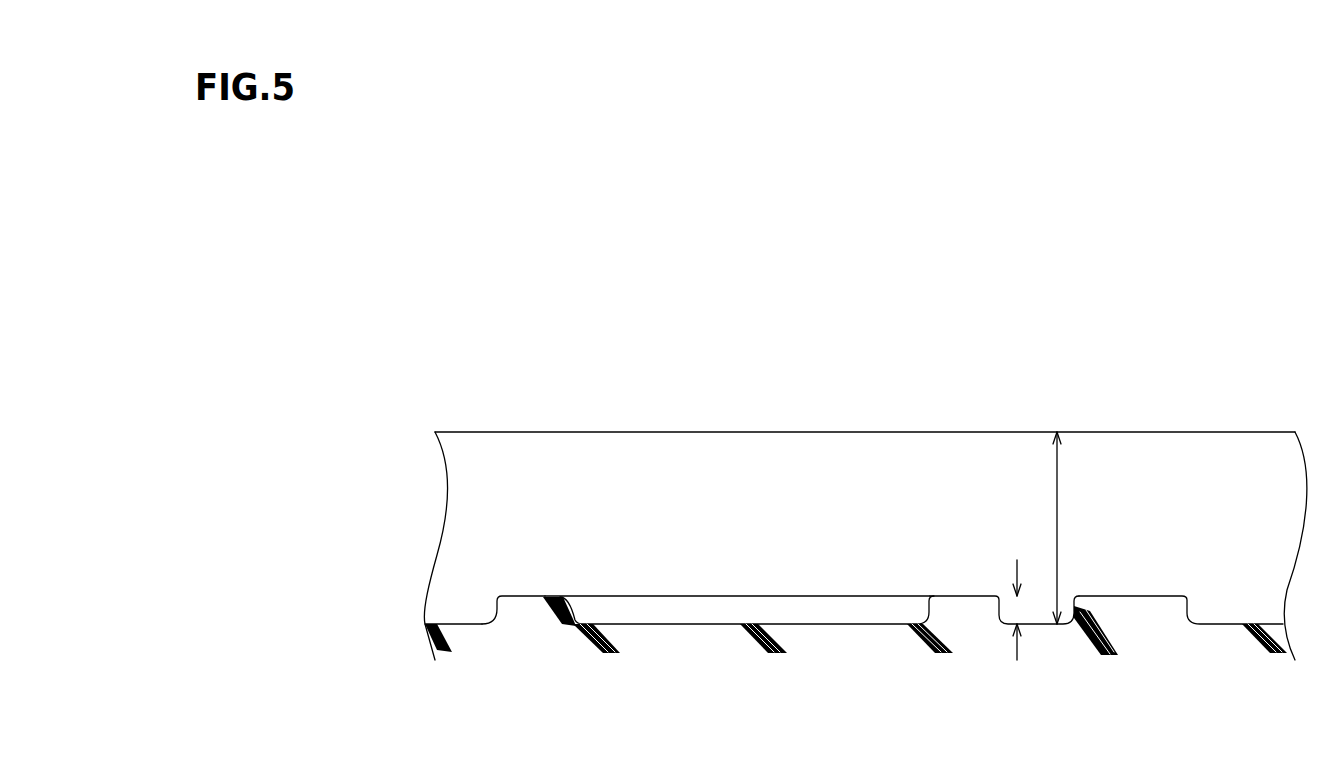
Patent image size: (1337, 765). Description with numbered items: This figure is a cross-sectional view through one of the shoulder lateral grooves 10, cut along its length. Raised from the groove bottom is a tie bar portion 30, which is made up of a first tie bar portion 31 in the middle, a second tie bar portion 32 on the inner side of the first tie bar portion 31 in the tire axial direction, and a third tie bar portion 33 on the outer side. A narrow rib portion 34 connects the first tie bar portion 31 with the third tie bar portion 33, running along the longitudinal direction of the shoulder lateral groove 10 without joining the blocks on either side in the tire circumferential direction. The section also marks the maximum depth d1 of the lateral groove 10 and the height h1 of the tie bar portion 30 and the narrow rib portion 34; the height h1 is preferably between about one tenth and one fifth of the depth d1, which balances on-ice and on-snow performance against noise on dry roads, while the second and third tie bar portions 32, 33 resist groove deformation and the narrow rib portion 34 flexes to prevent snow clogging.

The shoulder lateral groove 10 is at (828, 538).
The tie bar portion 30 is at (1004, 485).
The first tie bar portion 31 is at (965, 596).
The second tie bar portion 32 is at (1137, 596).
The third tie bar portion 33 is at (531, 596).
The narrow rib portion 34 is at (705, 596).
The maximum depth of the lateral groove d1 is at (1058, 494).
The height of the tie bar portion and the narrow rib portion h1 is at (1018, 598).